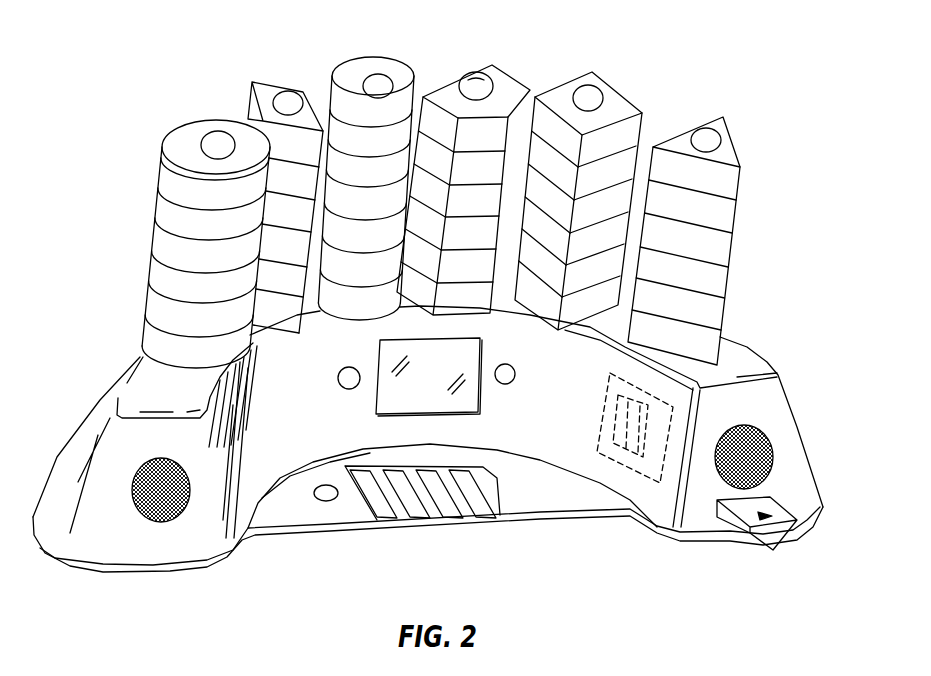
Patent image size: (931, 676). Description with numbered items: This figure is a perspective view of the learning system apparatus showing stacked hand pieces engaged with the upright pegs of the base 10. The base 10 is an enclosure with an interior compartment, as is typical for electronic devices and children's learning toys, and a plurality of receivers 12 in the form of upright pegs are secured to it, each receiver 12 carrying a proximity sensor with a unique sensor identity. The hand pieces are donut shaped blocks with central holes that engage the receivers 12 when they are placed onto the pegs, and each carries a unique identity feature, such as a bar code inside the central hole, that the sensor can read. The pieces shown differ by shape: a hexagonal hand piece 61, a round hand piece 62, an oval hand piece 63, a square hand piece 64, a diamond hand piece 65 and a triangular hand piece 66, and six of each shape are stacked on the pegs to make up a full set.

The base 10 is at (798, 428).
The receiver 12 is at (480, 80).
The hexagonal hand piece 61 is at (455, 72).
The round hand piece 62 is at (182, 130).
The oval hand piece 63 is at (367, 60).
The square hand piece 64 is at (612, 97).
The diamond hand piece 65 is at (263, 80).
The triangular hand piece 66 is at (735, 148).